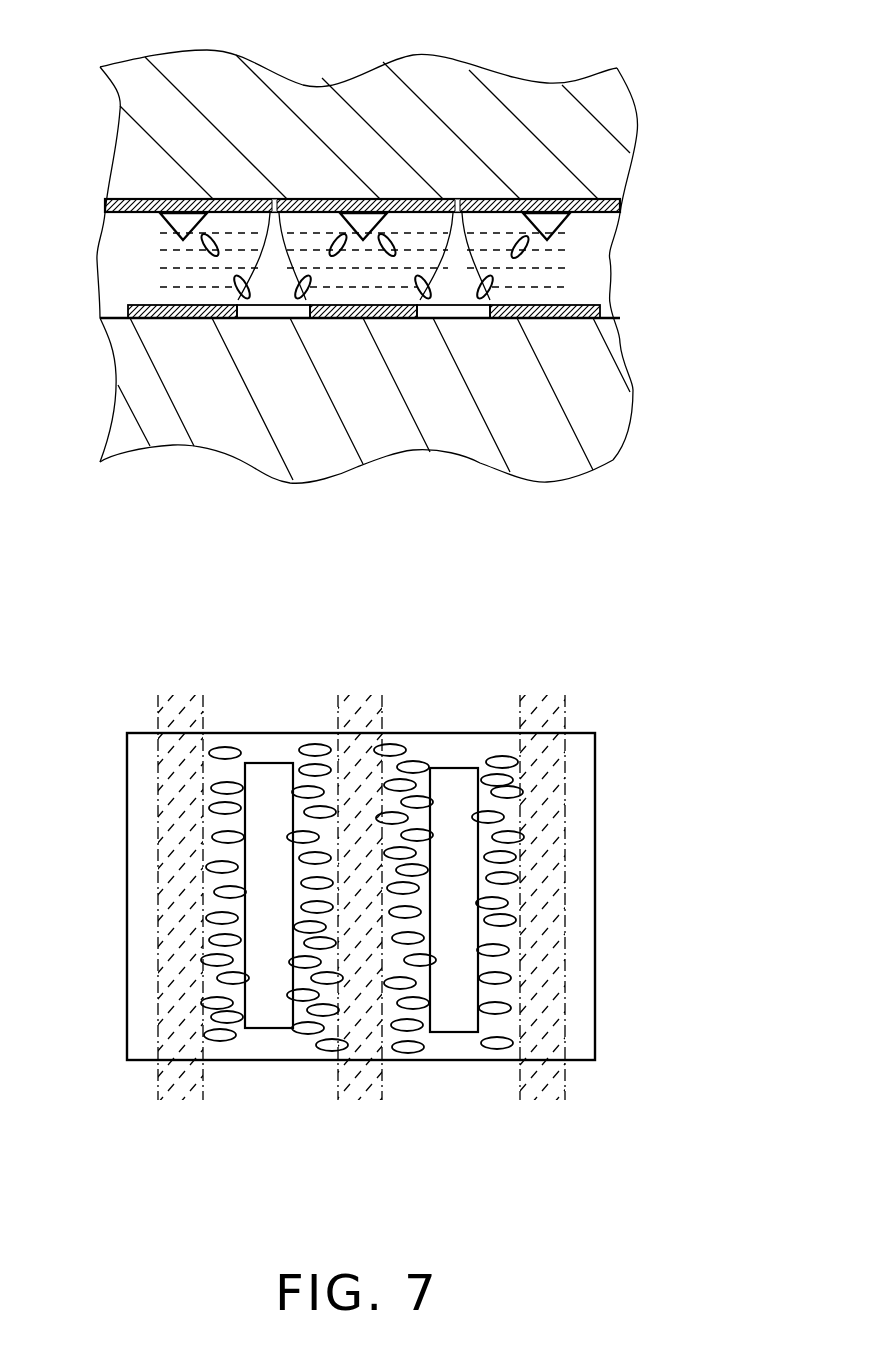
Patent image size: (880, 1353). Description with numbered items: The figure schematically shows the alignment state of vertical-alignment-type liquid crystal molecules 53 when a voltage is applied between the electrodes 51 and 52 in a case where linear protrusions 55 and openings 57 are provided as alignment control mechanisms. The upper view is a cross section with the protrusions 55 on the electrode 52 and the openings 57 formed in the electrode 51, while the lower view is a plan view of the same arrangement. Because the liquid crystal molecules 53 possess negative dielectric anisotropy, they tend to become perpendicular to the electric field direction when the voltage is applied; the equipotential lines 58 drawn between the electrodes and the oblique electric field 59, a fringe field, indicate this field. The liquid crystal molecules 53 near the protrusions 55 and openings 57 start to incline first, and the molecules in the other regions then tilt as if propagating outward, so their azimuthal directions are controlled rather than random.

The electrode 51 is at (600, 310).
The electrode 52 is at (610, 194).
The liquid crystal molecules 53 is at (205, 248).
The protrusions 55 is at (567, 233).
The openings 57 is at (425, 312).
The equipotential lines 58 is at (198, 290).
The oblique electric field 59 is at (247, 199).